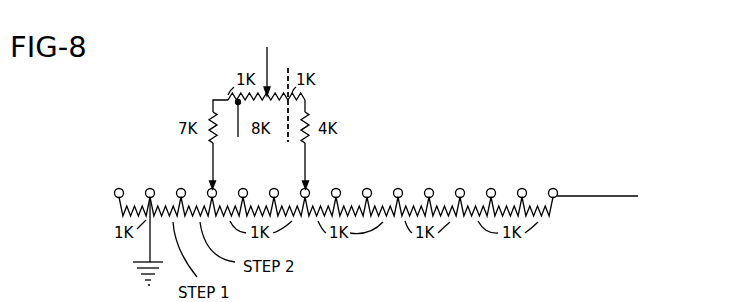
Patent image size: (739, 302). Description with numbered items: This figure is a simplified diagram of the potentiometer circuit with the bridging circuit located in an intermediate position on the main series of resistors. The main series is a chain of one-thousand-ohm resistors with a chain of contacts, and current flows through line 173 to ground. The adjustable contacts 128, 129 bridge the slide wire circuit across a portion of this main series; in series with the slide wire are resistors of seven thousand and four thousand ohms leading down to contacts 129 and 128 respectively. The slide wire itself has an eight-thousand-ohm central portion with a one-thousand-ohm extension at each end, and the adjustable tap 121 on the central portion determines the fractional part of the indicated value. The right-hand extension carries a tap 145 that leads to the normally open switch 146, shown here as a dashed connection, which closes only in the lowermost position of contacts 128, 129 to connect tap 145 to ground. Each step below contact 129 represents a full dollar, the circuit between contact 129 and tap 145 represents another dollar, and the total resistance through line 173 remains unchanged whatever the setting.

The adjustable tap 121 is at (266, 47).
The tap 145 is at (238, 137).
The normally open switch 146 is at (292, 116).
The adjustable contact 129 is at (208, 181).
The adjustable contact 128 is at (313, 181).
The line 173 is at (606, 196).